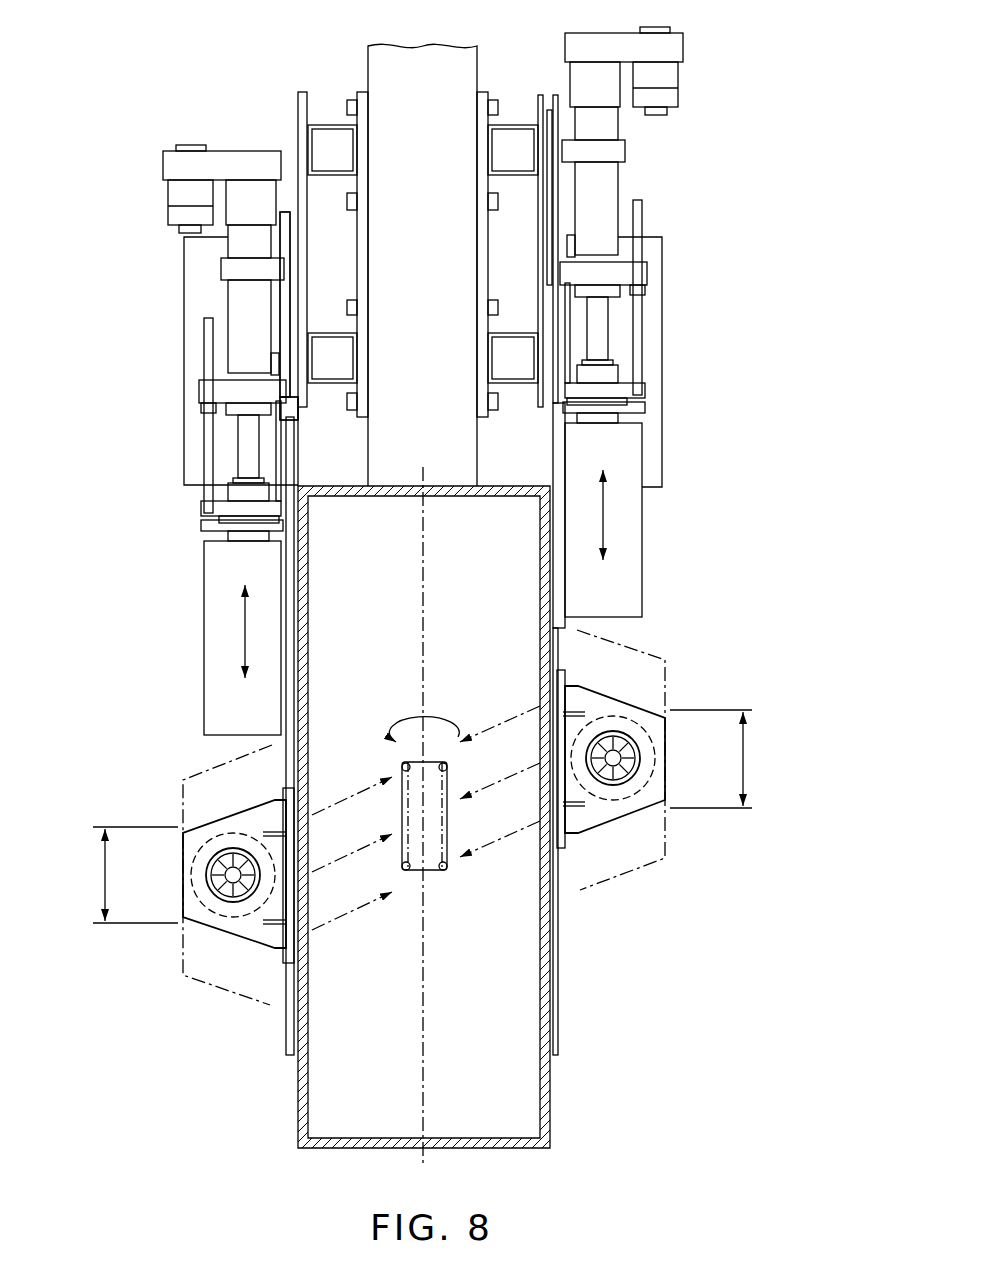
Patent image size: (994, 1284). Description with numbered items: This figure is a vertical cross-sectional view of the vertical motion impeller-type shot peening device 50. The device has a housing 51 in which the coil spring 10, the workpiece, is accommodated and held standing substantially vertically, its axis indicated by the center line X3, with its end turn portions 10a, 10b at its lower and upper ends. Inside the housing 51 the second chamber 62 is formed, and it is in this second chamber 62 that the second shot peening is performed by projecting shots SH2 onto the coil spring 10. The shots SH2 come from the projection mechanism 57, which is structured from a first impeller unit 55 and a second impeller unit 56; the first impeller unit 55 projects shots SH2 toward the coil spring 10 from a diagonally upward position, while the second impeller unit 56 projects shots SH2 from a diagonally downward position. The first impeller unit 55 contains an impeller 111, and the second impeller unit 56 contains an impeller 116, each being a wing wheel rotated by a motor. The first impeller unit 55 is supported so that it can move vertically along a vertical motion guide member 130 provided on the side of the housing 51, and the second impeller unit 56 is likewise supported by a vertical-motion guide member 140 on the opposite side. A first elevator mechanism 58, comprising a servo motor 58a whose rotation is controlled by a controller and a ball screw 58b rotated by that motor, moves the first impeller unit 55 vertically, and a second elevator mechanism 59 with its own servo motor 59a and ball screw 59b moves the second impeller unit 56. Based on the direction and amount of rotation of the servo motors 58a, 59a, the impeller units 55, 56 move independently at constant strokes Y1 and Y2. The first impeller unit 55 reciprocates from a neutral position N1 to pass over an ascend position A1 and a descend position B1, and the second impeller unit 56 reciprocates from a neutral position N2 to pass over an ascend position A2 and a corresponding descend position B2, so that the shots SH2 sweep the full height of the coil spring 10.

The vertical motion impeller-type shot peening device 50 is at (722, 366).
The housing 51 is at (508, 486).
The first impeller unit 55 is at (632, 700).
The second impeller unit 56 is at (223, 815).
The projection mechanism 57 is at (598, 848).
The first elevator mechanism 58 is at (545, 48).
The servo motor 58a is at (683, 70).
The ball screw 58b is at (618, 183).
The second elevator mechanism 59 is at (273, 101).
The servo motor 59a is at (163, 178).
The ball screw 59b is at (227, 300).
The second chamber 62 is at (497, 1062).
The impeller 111 is at (633, 790).
The impeller 116 is at (228, 905).
The vertical motion guide member 130 is at (560, 990).
The vertical-motion guide member 140 is at (294, 1000).
The coil spring 10 is at (402, 766).
The end turn portion 10a is at (406, 872).
The end turn portion 10b is at (401, 762).
The shots SH2 is at (355, 848).
The central axis X3 is at (426, 640).
The stroke Y1 is at (604, 515).
The stroke Y2 is at (245, 632).
The ascend position A1 is at (773, 712).
The descend position B1 is at (773, 810).
The neutral position N1 is at (670, 760).
The ascend position A2 is at (84, 828).
The lower position of second arm B2 is at (84, 925).
The neutral position N2 is at (178, 875).